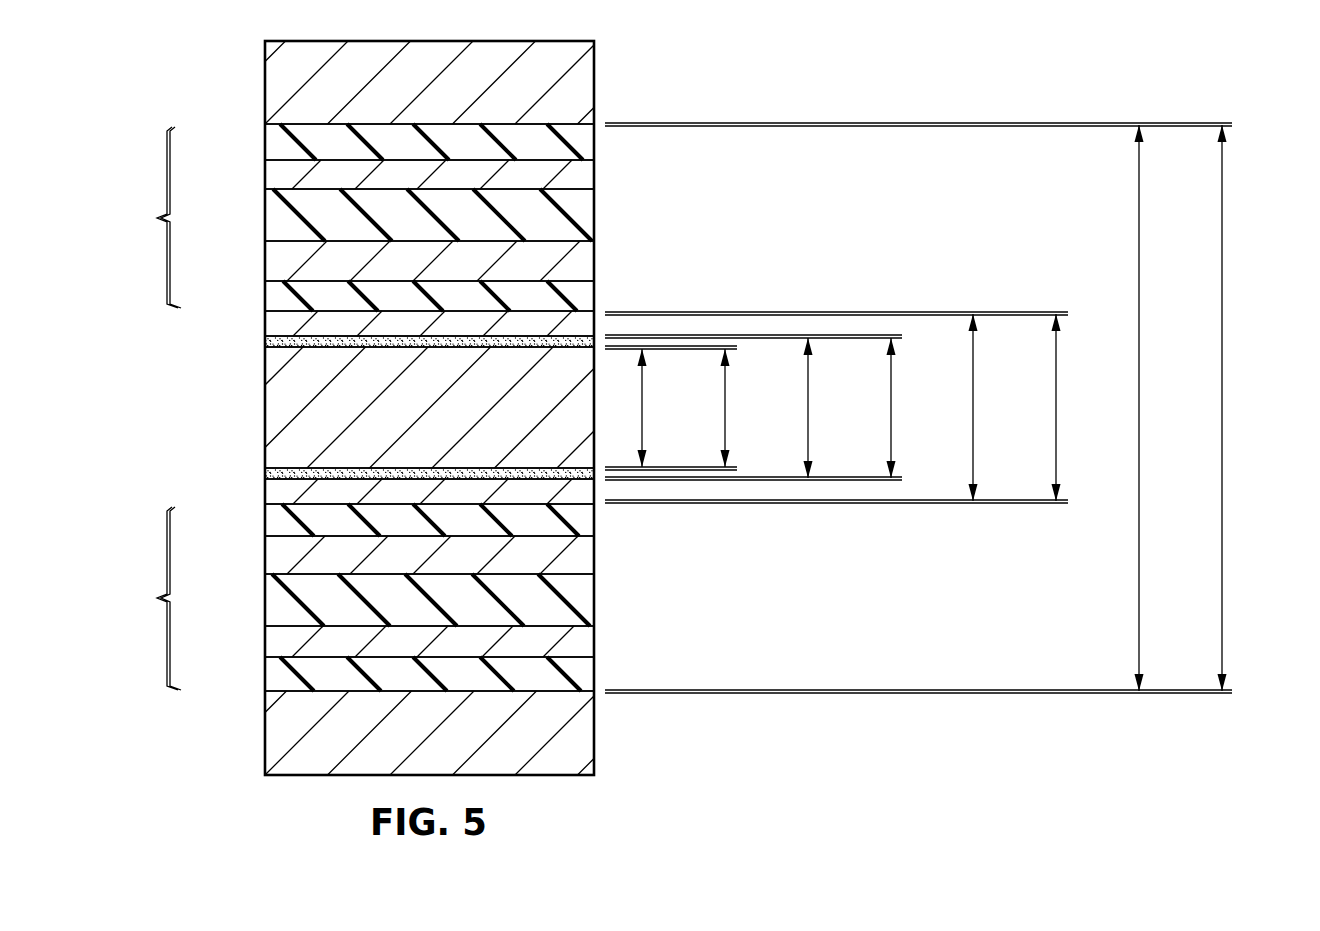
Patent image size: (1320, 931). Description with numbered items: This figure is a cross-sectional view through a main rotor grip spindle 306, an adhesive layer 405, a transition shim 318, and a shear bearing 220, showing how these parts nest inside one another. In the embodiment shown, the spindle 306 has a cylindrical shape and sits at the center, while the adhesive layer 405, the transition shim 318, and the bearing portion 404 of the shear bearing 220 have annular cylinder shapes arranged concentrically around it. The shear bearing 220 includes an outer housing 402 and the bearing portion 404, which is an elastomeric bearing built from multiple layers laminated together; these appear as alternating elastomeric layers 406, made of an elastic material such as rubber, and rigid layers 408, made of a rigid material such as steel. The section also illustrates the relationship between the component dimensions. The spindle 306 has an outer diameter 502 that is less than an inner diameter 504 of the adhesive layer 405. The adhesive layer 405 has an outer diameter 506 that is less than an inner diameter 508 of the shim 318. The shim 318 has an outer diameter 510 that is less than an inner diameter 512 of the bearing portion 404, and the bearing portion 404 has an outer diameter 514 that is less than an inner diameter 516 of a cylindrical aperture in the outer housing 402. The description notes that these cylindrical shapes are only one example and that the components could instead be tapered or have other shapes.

The shear bearing 220 is at (203, 100).
The main rotor grip spindle 306 is at (273, 404).
The transition shim 318 is at (273, 325).
The outer housing 402 is at (273, 82).
The bearing portion 404 is at (146, 408).
The adhesive layer 405 is at (273, 343).
The elastomeric layers 406 is at (273, 140).
The rigid layers 408 is at (273, 173).
The outer diameter of spindle 502 is at (642, 409).
The inner diameter of adhesive layer 504 is at (725, 409).
The outer diameter of adhesive layer 506 is at (808, 409).
The inner diameter of shim 508 is at (891, 409).
The outer diameter of shim 510 is at (973, 409).
The inner diameter of bearing portion 512 is at (1056, 409).
The outer diameter of bearing portion 514 is at (1139, 409).
The inner diameter of cylindrical aperture 516 is at (1222, 409).